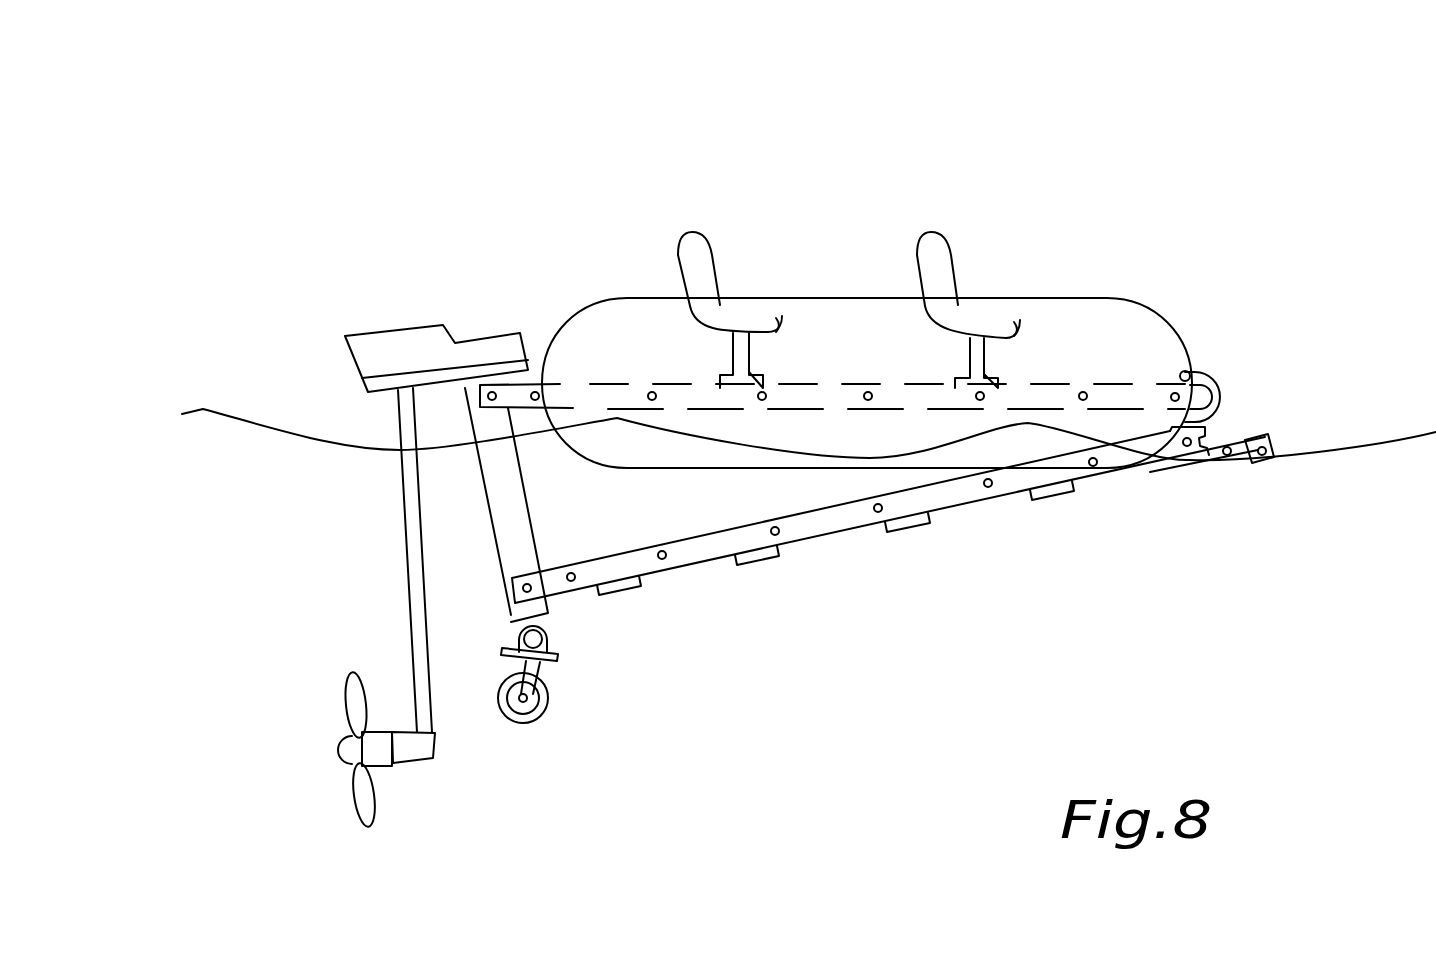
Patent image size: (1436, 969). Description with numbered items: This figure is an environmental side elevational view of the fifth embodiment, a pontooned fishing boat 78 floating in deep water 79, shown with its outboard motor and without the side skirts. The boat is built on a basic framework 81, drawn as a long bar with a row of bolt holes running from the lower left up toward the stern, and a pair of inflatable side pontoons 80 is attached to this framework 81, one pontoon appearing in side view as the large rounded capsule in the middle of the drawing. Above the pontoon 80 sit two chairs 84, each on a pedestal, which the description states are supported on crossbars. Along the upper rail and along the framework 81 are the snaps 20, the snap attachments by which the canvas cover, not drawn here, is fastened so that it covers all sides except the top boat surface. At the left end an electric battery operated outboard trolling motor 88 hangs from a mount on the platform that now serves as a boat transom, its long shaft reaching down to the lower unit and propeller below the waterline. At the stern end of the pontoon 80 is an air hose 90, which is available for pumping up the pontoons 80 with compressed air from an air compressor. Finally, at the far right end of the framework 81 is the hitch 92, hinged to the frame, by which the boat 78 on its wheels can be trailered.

The pontooned fishing boat 78 is at (851, 147).
The deep water 79 is at (1138, 607).
The inflatable side pontoons 80 is at (1100, 312).
The chairs 84 is at (925, 254).
The snap attachments 20 is at (775, 390).
The basic framework 81 is at (768, 572).
The outboard trolling motor 88 is at (418, 342).
The air hose 90 is at (1215, 373).
The hitch 92 is at (1273, 437).